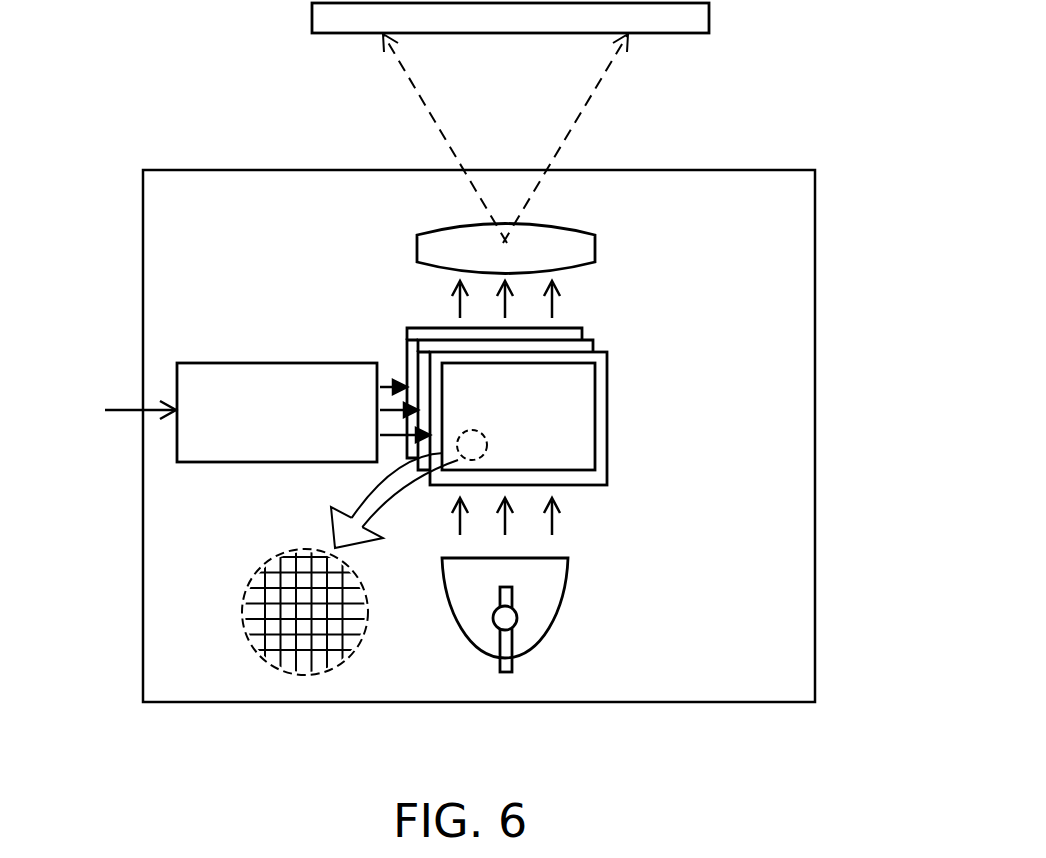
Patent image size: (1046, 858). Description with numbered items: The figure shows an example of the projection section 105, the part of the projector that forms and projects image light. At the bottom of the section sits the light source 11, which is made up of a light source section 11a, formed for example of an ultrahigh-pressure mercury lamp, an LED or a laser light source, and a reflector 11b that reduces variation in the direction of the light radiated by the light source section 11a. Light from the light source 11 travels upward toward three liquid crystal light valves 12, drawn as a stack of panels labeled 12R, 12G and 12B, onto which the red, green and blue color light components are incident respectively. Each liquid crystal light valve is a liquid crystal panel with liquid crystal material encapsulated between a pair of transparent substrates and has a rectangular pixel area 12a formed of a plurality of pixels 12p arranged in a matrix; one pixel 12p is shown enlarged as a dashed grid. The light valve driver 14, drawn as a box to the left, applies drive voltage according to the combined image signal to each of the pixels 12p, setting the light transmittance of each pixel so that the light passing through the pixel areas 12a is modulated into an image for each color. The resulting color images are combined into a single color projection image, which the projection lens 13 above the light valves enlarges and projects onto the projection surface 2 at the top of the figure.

The projection surface 2 is at (685, 35).
The projection section 105 is at (190, 170).
The projection lens 13 is at (580, 248).
The liquid crystal light valves 12 is at (601, 394).
The liquid crystal light valve 12B is at (580, 333).
The liquid crystal light valve 12G is at (590, 344).
The liquid crystal light valve 12R is at (574, 418).
The pixel area 12a is at (575, 440).
The pixel 12p is at (290, 565).
The light valve driver 14 is at (318, 363).
The light source 11 is at (527, 620).
The light source section 11a is at (512, 620).
The reflector 11b is at (457, 634).